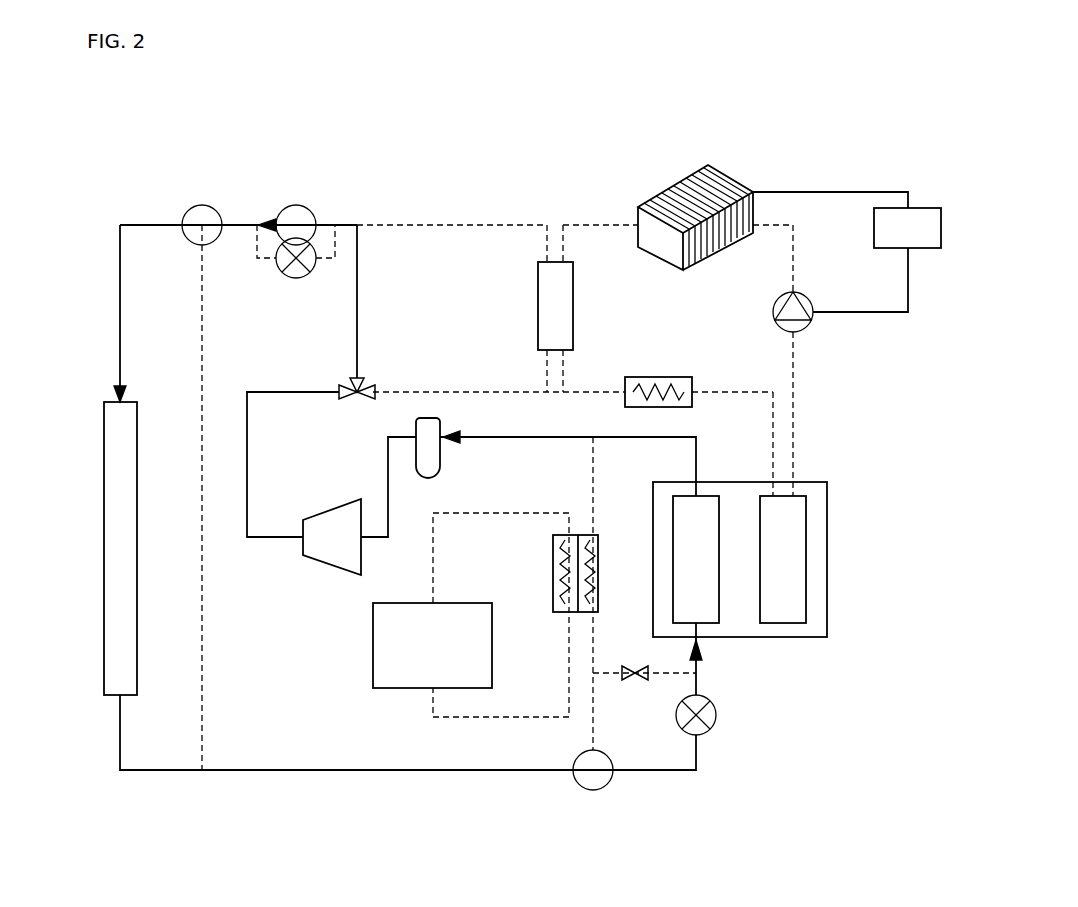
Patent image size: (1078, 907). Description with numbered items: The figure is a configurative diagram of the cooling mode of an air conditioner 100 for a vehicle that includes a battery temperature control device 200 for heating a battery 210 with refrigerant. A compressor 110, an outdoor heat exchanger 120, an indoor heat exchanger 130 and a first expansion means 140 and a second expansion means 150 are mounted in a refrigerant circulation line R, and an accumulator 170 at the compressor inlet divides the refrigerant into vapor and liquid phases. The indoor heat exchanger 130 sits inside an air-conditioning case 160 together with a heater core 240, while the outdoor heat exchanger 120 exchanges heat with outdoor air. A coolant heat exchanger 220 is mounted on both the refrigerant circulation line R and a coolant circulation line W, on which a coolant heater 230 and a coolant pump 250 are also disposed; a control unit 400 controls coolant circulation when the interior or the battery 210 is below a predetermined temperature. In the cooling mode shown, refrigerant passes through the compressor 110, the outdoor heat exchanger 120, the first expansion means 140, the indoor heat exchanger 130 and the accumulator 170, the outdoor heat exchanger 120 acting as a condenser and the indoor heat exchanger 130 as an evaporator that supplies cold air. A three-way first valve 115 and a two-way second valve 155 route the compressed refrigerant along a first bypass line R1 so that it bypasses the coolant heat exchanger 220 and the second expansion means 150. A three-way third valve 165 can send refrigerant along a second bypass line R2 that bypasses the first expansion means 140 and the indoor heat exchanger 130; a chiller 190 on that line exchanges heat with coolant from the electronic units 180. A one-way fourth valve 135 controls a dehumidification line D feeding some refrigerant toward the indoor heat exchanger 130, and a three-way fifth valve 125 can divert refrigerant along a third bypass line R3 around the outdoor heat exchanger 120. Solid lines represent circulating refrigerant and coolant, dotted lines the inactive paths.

The air conditioner for a vehicle 100 is at (432, 198).
The compressor 110 is at (332, 568).
The first valve 115 is at (367, 380).
The outdoor heat exchanger 120 is at (104, 553).
The fifth valve 125 is at (200, 205).
The indoor heat exchanger 130 is at (713, 625).
The fourth valve 135 is at (640, 680).
The first expansion means 140 is at (716, 715).
The second expansion means 150 is at (297, 278).
The second valve 155 is at (296, 205).
The air-conditioning case 160 is at (827, 560).
The third valve 165 is at (593, 790).
The accumulator 170 is at (440, 465).
The electronic units 180 is at (373, 666).
The chiller 190 is at (553, 577).
The battery temperature control device 200 is at (783, 163).
The battery 210 is at (726, 178).
The coolant heat exchanger 220 is at (538, 305).
The coolant heater 230 is at (675, 377).
The heater core 240 is at (792, 625).
The coolant pump 250 is at (808, 297).
The control unit 400 is at (925, 208).
The refrigerant circulation line R is at (338, 772).
The first bypass line R1 is at (357, 298).
The second bypass line R2 is at (593, 488).
The third bypass line R3 is at (202, 330).
The coolant circulation line W is at (793, 405).
The dehumidification line D is at (606, 673).